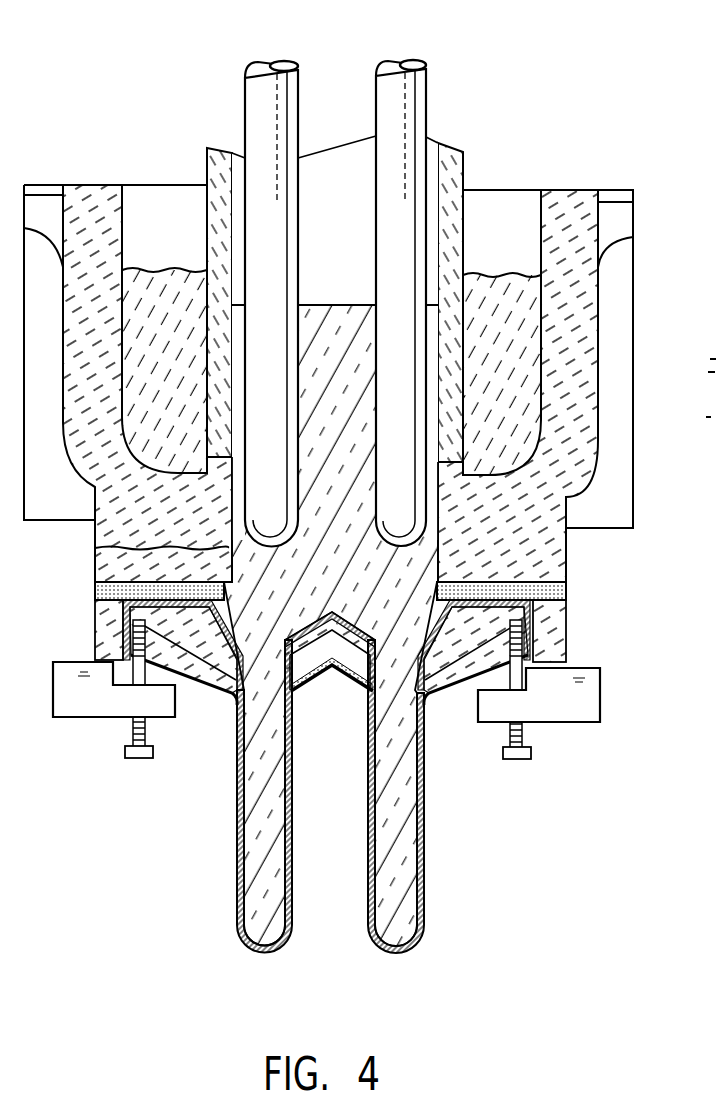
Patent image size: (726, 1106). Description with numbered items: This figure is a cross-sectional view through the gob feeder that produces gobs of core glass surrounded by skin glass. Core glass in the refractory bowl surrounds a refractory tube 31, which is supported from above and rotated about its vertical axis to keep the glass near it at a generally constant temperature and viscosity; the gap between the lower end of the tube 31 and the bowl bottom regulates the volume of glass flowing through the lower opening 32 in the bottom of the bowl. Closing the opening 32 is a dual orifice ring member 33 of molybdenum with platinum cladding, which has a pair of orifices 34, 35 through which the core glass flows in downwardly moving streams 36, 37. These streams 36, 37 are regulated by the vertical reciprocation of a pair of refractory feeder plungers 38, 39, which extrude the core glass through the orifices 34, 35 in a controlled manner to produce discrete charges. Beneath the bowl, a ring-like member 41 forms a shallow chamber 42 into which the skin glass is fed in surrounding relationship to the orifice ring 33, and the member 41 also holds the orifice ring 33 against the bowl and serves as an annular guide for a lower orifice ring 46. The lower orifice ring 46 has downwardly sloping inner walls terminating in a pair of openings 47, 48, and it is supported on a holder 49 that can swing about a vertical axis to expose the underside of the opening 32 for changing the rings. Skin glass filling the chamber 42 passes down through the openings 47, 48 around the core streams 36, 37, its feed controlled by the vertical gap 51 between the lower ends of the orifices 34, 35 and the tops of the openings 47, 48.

The refractory tube 31 is at (460, 160).
The lower opening 32 is at (98, 550).
The dual orifice ring member 33 is at (567, 586).
The orifice 34 is at (296, 655).
The orifice 35 is at (362, 700).
The downwardly moving stream 36 is at (240, 775).
The downwardly moving stream 37 is at (420, 715).
The feeder plunger 38 is at (259, 82).
The feeder plunger 39 is at (389, 78).
The ring-like member 41 is at (567, 646).
The shallow chamber 42 is at (138, 700).
The lower orifice ring 46 is at (202, 690).
The opening 47 is at (238, 720).
The opening 48 is at (432, 716).
The holder 49 is at (66, 700).
The gap 51 is at (272, 660).